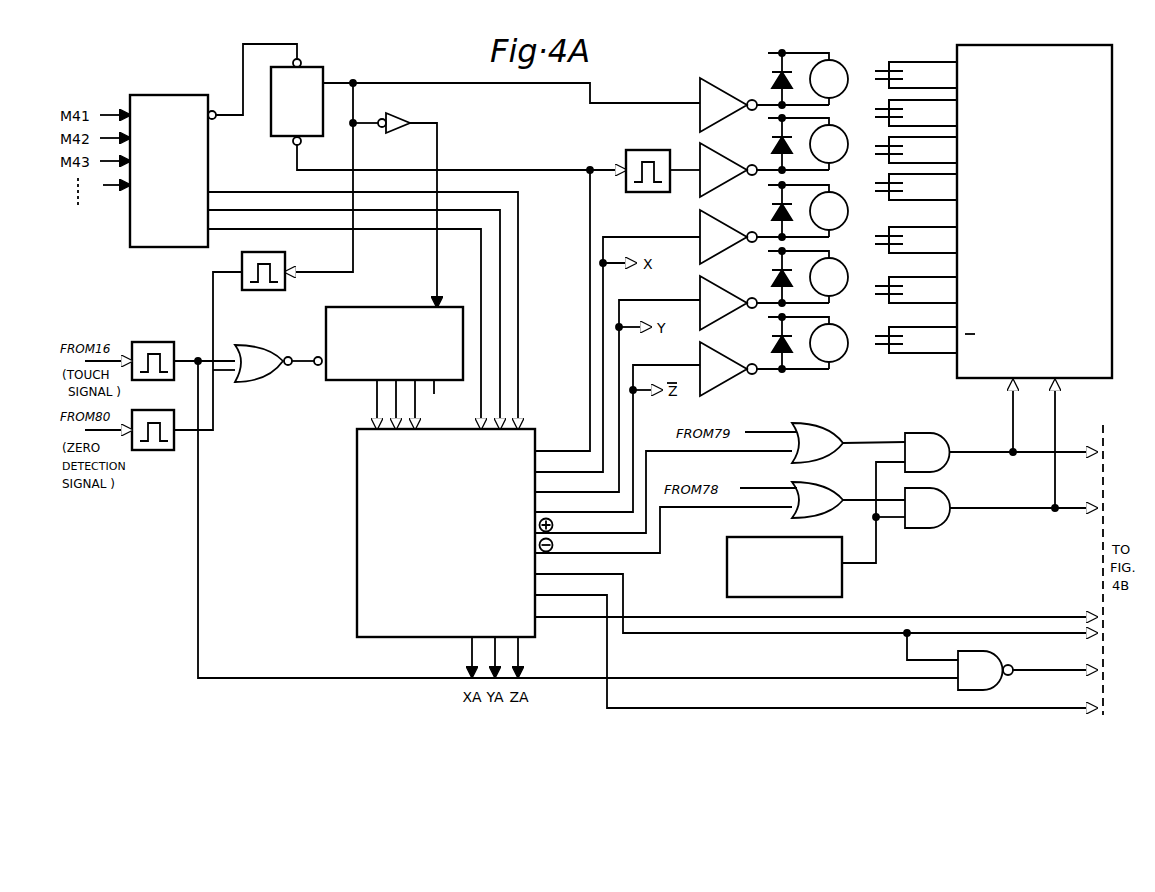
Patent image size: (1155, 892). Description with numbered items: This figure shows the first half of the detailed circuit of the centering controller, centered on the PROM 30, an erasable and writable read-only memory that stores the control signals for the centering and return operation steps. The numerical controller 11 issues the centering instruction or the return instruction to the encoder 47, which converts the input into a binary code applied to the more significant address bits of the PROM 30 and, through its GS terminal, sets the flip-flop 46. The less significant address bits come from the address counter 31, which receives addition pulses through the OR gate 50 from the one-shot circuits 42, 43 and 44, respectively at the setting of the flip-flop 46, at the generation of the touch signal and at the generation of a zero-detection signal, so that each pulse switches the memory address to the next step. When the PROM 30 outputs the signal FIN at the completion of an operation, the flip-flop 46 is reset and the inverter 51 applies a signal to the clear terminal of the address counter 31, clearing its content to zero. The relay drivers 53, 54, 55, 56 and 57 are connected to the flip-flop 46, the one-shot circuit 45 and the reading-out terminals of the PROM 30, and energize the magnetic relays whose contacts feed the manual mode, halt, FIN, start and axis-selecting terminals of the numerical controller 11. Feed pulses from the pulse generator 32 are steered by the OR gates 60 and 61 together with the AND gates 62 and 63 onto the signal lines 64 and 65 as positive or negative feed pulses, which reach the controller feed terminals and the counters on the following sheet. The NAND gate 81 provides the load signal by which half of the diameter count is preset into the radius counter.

The numerical controller 11 is at (1072, 54).
The PROM 30 is at (357, 573).
The address counter 31 is at (365, 307).
The pulse generator 32 is at (727, 570).
The one-shot circuit 42 is at (287, 264).
The one-shot circuit 43 is at (148, 342).
The one-shot circuit 44 is at (150, 412).
The one-shot circuit 45 is at (654, 150).
The flip-flop 46 is at (301, 72).
The encoder 47 is at (162, 95).
The OR gate 50 is at (262, 348).
The inverter 51 is at (402, 114).
The relay driver 53 is at (724, 92).
The relay driver 54 is at (724, 158).
The relay driver 55 is at (724, 225).
The relay driver 56 is at (724, 291).
The relay driver 57 is at (724, 357).
The OR gate 60 is at (816, 426).
The OR gate 61 is at (818, 484).
The AND gate 62 is at (941, 436).
The AND gate 63 is at (941, 493).
The signal line 64 is at (1020, 454).
The signal line 65 is at (1038, 510).
The NAND gate 81 is at (1005, 666).